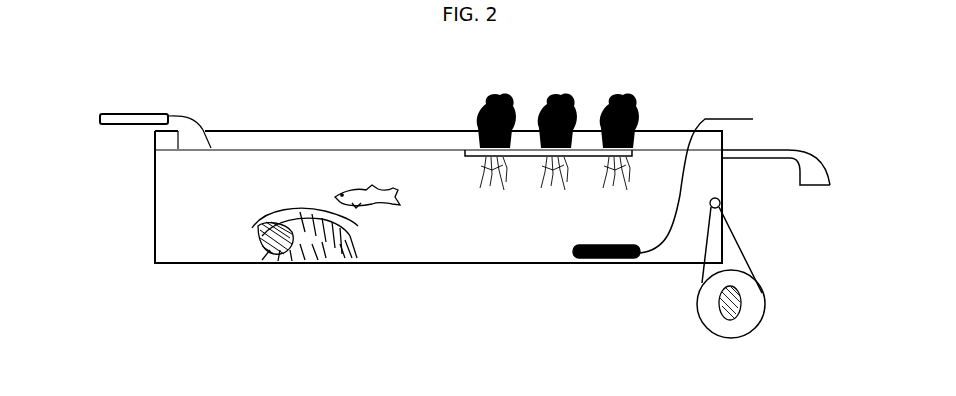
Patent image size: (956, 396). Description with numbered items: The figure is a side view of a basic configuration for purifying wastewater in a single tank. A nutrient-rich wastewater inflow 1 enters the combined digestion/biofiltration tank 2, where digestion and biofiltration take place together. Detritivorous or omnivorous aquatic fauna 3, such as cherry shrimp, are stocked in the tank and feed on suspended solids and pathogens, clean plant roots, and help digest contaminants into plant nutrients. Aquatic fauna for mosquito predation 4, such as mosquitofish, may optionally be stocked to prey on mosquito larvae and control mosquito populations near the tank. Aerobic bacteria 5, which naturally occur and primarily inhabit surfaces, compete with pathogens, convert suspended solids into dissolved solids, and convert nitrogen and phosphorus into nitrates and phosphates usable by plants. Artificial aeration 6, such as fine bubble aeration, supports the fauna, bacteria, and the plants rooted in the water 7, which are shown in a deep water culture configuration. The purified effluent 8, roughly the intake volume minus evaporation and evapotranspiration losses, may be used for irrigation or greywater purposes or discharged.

The nutrient-rich wastewater inflow 1 is at (119, 135).
The combined digestion/biofiltration tank 2 is at (140, 252).
The detritivorous or omnivorous aquatic fauna 3 is at (271, 262).
The aquatic fauna for mosquito predation 4 is at (353, 176).
The aerobic bacteria 5 is at (748, 312).
The artificial aeration 6 is at (611, 272).
The plants rooted in the water 7 is at (528, 100).
The purified effluent 8 is at (831, 198).